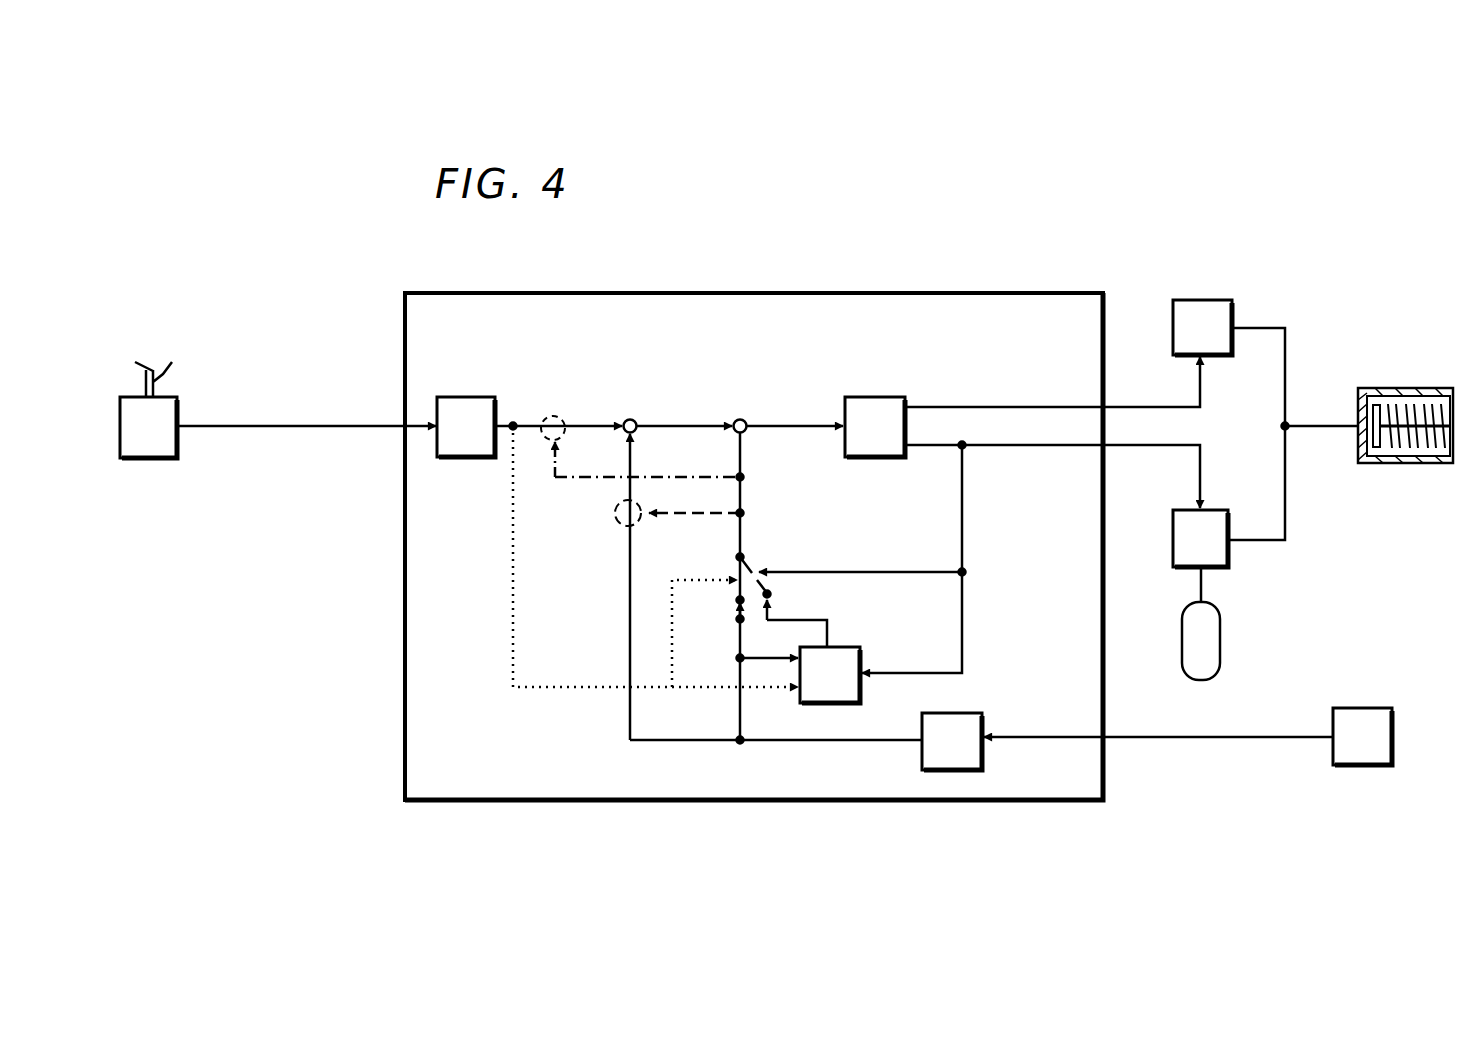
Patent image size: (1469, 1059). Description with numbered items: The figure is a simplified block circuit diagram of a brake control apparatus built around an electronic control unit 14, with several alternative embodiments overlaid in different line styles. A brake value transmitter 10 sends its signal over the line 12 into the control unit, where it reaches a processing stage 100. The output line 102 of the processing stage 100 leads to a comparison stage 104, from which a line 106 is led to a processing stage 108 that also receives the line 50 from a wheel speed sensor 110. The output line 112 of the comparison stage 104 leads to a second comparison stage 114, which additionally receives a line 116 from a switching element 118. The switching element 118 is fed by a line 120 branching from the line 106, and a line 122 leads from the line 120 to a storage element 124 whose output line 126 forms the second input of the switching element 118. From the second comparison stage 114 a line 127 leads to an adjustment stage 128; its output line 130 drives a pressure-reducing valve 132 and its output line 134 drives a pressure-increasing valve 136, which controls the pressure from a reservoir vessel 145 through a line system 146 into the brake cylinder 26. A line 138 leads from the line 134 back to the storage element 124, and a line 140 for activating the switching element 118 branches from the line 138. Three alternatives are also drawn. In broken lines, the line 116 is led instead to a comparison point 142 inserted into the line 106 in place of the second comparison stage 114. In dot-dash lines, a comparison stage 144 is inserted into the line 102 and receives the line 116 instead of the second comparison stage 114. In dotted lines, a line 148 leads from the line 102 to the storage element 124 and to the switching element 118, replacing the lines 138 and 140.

The brake value transmitter 10 is at (207, 352).
The line 12 is at (303, 463).
The electronic control unit 14 is at (1105, 290).
The brake cylinder 26 is at (1388, 386).
The line 50 is at (1225, 750).
The processing stage 100 is at (461, 458).
The output line 102 is at (593, 423).
The comparison stage 104 is at (641, 412).
The line 106 is at (629, 579).
The processing stage 108 is at (983, 713).
The wheel speed sensor 110 is at (1388, 708).
The output line 112 is at (697, 423).
The second comparison stage 114 is at (750, 412).
The line 116 is at (745, 497).
The switching element 118 is at (758, 556).
The line 120 is at (738, 641).
The line 122 is at (771, 661).
The storage element 124 is at (862, 651).
The output line 126 is at (827, 620).
The line 127 is at (810, 423).
The adjustment stage 128 is at (906, 397).
The output line 130 is at (1053, 404).
The pressure-reducing valve 132 is at (1232, 300).
The output line 134 is at (1079, 450).
The pressure-increasing valve 136 is at (1229, 509).
The line 138 is at (962, 533).
The line 140 is at (915, 568).
The comparison point 142 is at (613, 507).
The comparison stage 144 is at (578, 374).
The reservoir vessel 145 is at (1220, 632).
The line system 146 is at (1285, 540).
The line 148 is at (575, 686).